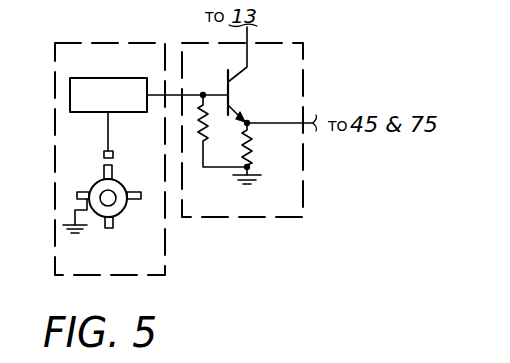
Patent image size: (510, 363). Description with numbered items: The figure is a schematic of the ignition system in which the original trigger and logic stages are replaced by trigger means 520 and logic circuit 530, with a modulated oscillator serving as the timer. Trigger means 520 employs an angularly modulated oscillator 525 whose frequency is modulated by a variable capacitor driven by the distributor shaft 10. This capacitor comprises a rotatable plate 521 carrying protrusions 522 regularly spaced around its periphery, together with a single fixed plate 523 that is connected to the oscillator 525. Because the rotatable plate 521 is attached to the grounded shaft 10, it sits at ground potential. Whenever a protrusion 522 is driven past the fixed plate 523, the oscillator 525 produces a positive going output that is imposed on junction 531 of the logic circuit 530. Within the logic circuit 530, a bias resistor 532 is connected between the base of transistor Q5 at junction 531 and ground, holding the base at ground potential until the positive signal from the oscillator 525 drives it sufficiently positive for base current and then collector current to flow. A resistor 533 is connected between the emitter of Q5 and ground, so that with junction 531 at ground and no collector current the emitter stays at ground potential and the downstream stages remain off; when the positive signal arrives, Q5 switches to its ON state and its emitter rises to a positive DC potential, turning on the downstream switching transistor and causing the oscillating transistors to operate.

The distributor shaft 10 is at (110, 195).
The trigger means 520 is at (167, 260).
The rotatable plate 521 is at (103, 212).
The protrusions 522 is at (141, 198).
The fixed plate 523 is at (104, 155).
The oscillator 525 is at (149, 95).
The logic circuit 530 is at (305, 176).
The junction 531 is at (203, 95).
The bias resistor 532 is at (203, 142).
The resistor 533 is at (247, 148).
The transistor Q5 is at (245, 96).